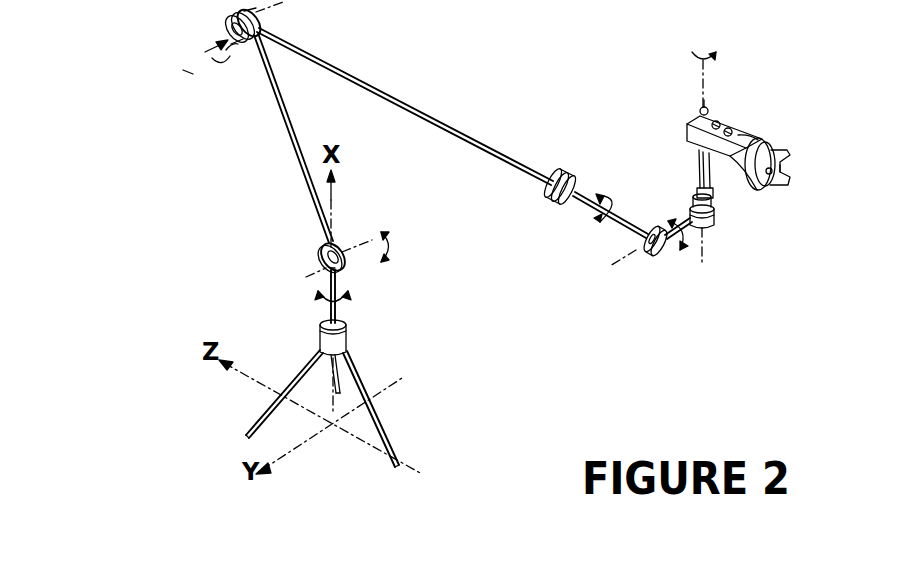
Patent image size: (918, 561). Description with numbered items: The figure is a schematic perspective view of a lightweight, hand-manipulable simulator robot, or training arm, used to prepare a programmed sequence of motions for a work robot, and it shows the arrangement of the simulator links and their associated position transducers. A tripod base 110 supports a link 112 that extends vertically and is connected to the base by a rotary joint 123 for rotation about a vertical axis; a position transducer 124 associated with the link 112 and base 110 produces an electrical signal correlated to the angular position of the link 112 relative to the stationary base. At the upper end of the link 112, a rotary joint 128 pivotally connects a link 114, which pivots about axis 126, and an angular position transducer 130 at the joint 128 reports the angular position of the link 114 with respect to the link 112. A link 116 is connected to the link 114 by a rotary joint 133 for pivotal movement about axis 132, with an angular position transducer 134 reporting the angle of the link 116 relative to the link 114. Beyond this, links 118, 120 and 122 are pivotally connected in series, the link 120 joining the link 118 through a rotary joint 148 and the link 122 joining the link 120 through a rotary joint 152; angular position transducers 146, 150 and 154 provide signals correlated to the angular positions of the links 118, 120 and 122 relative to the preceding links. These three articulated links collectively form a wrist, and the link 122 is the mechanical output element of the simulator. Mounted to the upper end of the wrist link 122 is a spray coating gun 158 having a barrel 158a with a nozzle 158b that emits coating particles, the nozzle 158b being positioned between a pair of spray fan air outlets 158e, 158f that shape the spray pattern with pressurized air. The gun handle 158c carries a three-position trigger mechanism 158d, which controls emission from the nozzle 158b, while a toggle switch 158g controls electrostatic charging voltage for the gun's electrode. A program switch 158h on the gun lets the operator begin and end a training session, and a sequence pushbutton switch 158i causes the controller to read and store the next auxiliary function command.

The tripod base 110 is at (376, 357).
The link 112 is at (340, 276).
The link 114 is at (280, 130).
The link 116 is at (446, 123).
The link 118 is at (618, 226).
The link 120 is at (700, 236).
The link 122 is at (722, 192).
The rotary joint 123 is at (348, 340).
The position transducer 124 is at (340, 316).
The axis 126 is at (300, 273).
The rotary joint 128 is at (340, 245).
The angular position transducer 130 is at (324, 258).
The axis 132 is at (205, 52).
The rotary joint 133 is at (262, 19).
The angular position transducer 134 is at (246, 44).
The angular position transducer 146 is at (568, 202).
The rotary joint 148 is at (680, 250).
The angular position transducer 150 is at (654, 252).
The rotary joint 152 is at (712, 228).
The angular position transducer 154 is at (716, 210).
The spray coating gun 158 is at (670, 72).
The barrel 158a is at (740, 148).
The nozzle 158b is at (785, 170).
The gun handle 158c is at (690, 152).
The trigger mechanism 158d is at (698, 184).
The spray fan air outlet 158e is at (788, 152).
The spray fan air outlet 158f is at (786, 188).
The toggle switch 158g is at (702, 106).
The program switch 158h is at (718, 122).
The sequence pushbutton switch 158i is at (730, 128).